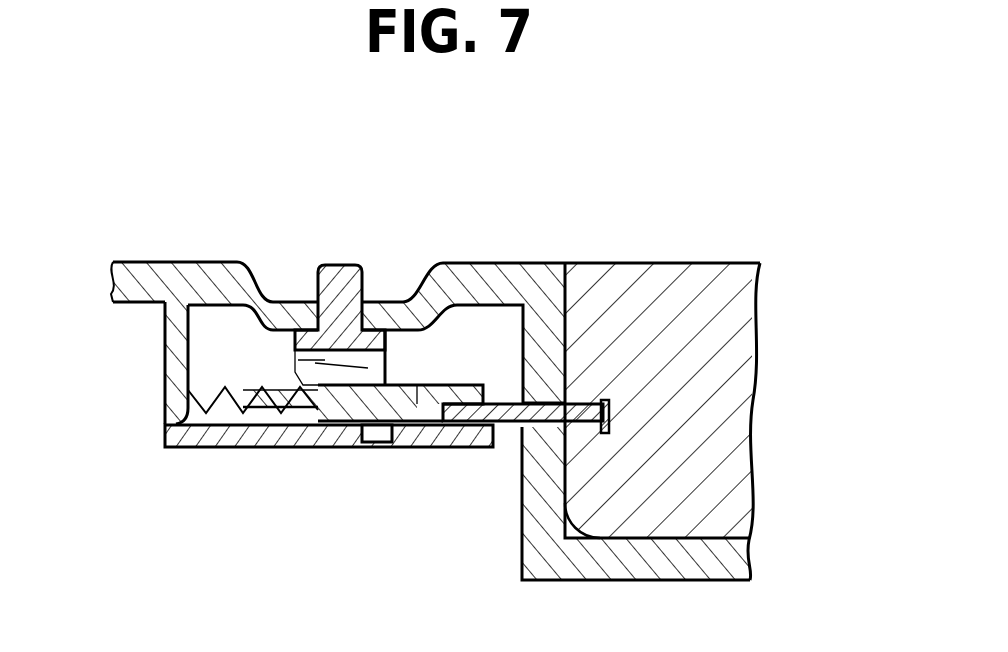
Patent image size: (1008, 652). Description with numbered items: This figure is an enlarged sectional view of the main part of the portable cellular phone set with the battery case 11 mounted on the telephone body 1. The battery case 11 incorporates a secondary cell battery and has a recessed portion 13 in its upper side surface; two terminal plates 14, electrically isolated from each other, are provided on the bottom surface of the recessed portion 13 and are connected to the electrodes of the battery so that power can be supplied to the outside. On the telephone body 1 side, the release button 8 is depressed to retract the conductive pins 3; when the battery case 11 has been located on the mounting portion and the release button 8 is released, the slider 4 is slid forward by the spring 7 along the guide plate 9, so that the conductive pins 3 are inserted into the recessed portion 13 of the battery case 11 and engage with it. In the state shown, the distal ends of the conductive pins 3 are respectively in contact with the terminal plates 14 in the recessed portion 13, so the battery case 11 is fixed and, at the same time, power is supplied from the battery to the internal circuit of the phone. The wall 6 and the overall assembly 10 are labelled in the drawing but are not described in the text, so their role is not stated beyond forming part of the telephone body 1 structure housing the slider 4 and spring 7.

The telephone body 1 is at (485, 267).
The conductive pins 3 is at (511, 420).
The slider 4 is at (366, 430).
The side wall 6 is at (170, 345).
The spring 7 is at (190, 386).
The release button 8 is at (348, 264).
The guide plate 9 is at (257, 446).
The connector assembly 10 is at (278, 258).
The battery case 11 is at (766, 316).
The recessed portion 13 is at (587, 398).
The terminal plates 14 is at (608, 417).